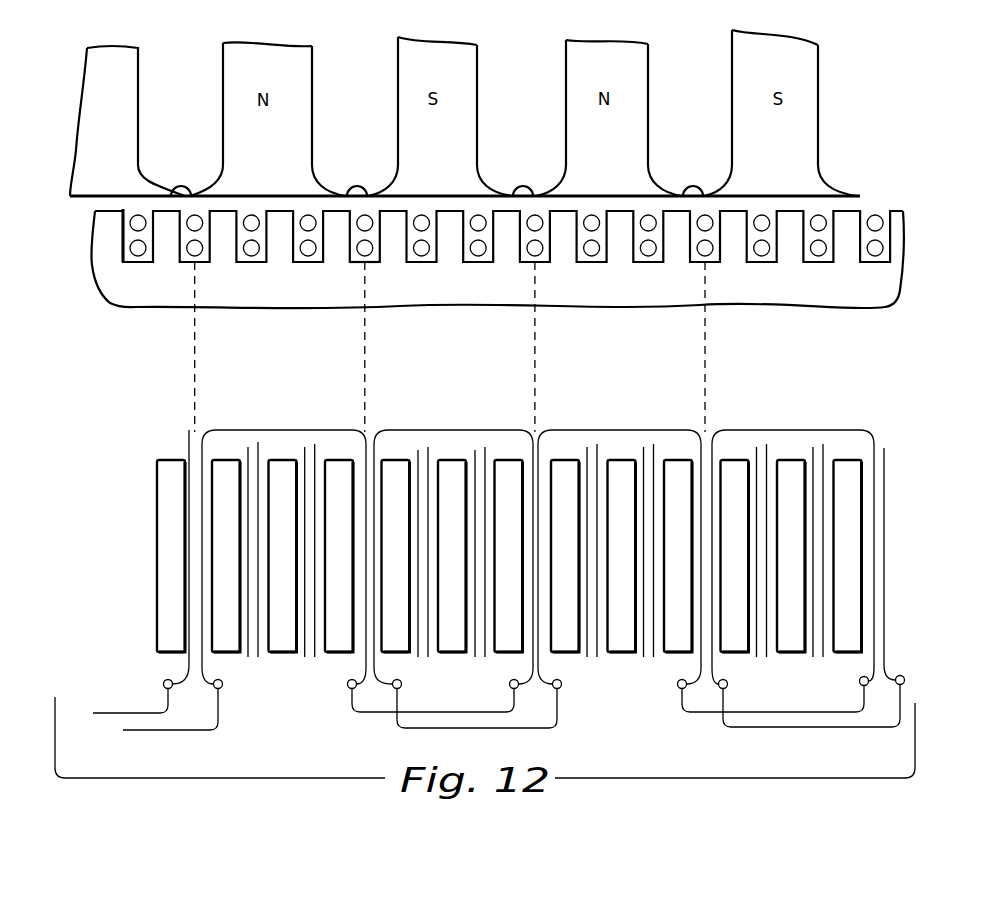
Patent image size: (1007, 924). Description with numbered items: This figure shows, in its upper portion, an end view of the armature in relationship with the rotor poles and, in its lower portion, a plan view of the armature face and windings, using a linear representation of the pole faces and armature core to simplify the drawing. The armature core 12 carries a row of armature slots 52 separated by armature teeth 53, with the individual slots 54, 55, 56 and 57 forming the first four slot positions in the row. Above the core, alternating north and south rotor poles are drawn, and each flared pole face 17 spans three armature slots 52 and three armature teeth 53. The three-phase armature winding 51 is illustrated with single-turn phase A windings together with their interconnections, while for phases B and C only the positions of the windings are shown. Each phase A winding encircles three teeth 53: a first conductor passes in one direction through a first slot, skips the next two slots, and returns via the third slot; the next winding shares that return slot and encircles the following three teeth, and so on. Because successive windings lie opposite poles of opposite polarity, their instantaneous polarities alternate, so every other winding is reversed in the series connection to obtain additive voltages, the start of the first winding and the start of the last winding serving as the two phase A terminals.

The stator base 12 is at (137, 293).
The flared pole face 17 is at (492, 173).
The three-phase armature winding 51 is at (236, 430).
The armature slots 52 is at (132, 257).
The armature teeth 53 is at (163, 485).
The slot 54 is at (198, 262).
The slot 55 is at (254, 262).
The slot 56 is at (296, 262).
The slot 57 is at (378, 262).